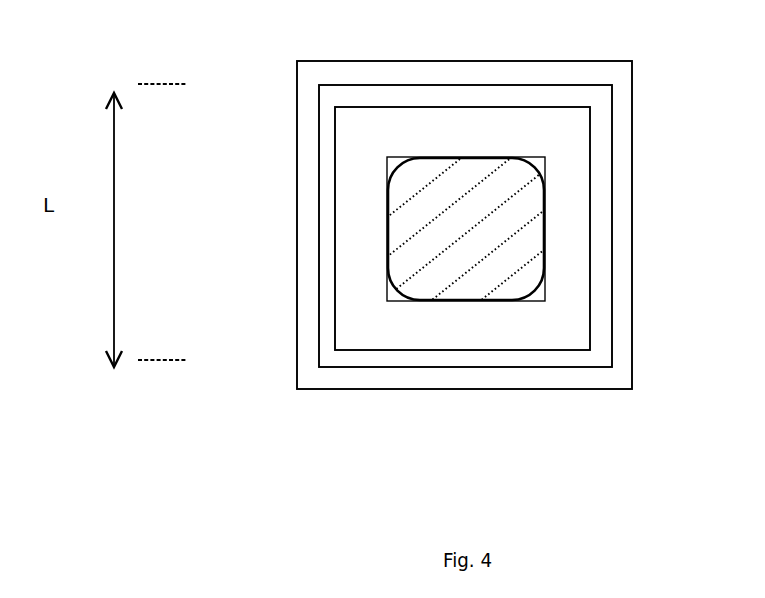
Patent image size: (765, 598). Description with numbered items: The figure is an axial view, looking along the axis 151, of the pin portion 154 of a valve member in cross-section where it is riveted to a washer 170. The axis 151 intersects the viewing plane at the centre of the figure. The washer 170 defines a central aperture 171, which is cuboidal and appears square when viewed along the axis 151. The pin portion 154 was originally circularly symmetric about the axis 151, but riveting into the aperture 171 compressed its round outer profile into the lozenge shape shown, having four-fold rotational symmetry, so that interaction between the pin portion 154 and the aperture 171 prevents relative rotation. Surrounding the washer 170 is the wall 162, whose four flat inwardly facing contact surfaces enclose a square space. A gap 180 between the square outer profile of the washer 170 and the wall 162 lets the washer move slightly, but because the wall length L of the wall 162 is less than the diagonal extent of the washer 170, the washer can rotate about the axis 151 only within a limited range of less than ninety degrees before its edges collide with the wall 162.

The wall 162 is at (622, 102).
The washer 170 is at (580, 197).
The gap 180 is at (603, 279).
The central aperture 171 is at (387, 158).
The pin portion 154 is at (407, 221).
The axis 151 is at (468, 233).